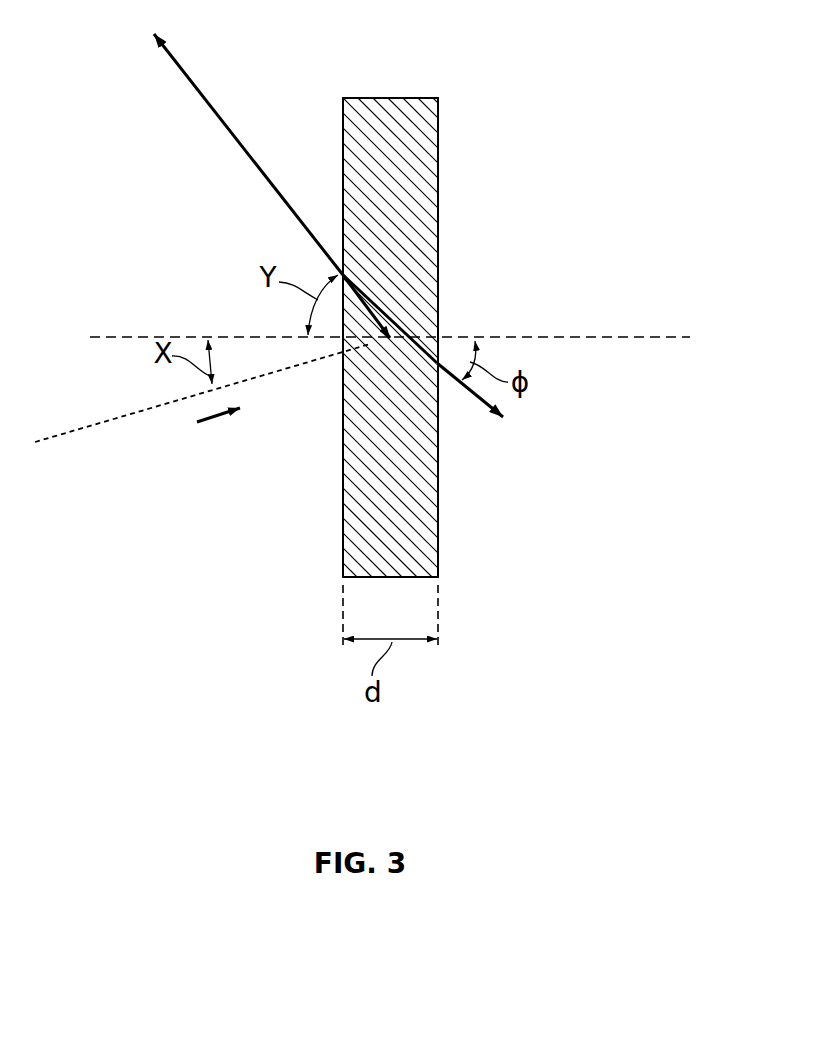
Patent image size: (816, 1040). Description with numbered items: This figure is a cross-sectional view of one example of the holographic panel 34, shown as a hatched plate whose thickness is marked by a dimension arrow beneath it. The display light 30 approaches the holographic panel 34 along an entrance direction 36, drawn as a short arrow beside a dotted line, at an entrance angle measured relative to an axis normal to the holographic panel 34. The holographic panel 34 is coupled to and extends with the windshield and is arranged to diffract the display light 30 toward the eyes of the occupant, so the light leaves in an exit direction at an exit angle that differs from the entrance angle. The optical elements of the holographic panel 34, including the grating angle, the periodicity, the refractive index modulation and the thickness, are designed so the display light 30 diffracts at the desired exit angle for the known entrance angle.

The display light 30 is at (63, 434).
The holographic panel 34 is at (380, 97).
The entrance direction 36 is at (216, 426).